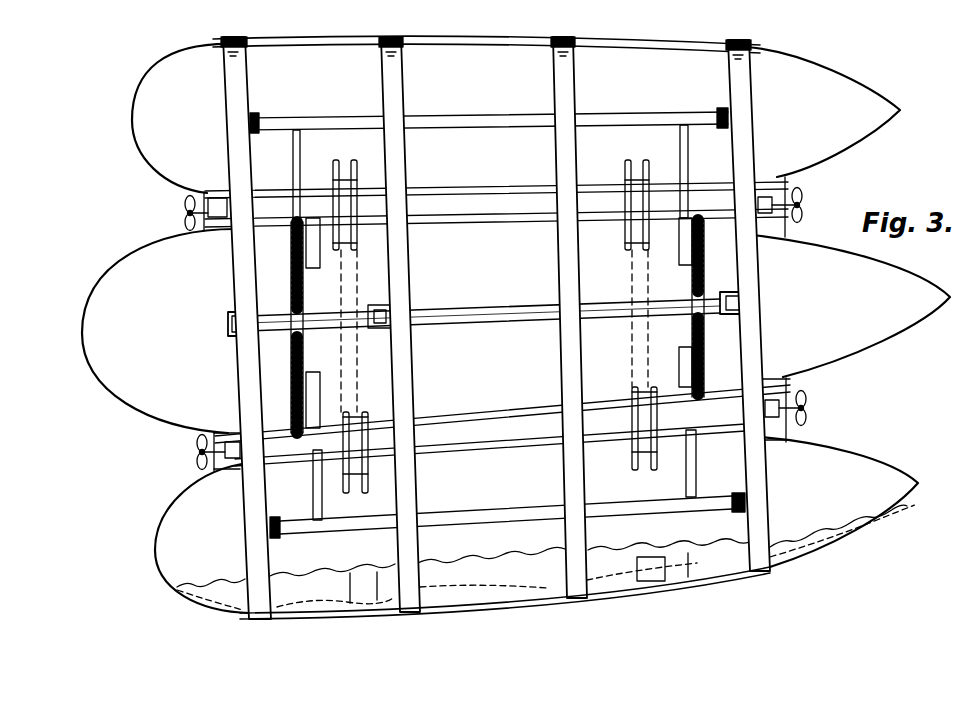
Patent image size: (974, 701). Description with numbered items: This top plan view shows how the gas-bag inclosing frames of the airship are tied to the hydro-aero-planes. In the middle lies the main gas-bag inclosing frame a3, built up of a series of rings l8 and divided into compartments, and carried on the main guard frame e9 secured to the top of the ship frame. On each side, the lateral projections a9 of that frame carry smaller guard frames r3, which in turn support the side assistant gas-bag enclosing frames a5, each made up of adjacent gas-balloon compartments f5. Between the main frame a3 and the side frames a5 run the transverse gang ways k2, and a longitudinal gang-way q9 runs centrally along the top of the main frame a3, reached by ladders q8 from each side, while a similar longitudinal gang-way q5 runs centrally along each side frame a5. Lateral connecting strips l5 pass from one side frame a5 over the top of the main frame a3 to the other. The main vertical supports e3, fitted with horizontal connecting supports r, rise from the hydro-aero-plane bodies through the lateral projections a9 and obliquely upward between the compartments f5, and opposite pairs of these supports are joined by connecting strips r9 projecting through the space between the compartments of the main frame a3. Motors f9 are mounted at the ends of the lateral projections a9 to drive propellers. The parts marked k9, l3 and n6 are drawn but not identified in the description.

The main gas-bag inclosing frame a3 is at (140, 424).
The side assistant gas-bag enclosing frame a5 is at (160, 178).
The lateral projection a9 is at (742, 405).
The main vertical support e3 is at (357, 161).
The main gas-balloon inclosing frame supporting guard frame e9 is at (230, 428).
The gas-balloon f5 is at (333, 599).
The motor f9 is at (213, 195).
The transverse gang way k2 is at (293, 173).
The propeller k9 is at (186, 216).
The bearing block l3 is at (258, 116).
The lateral connecting strip l5 is at (410, 274).
The ring l8 is at (227, 322).
The float compartment n6 is at (519, 578).
The longitudinally extending gang-way q5 is at (478, 115).
The ladder q8 is at (291, 284).
The gang-way q9 is at (483, 325).
The horizontally arranged connecting support r is at (350, 180).
The smaller gas balloon inclosing frame supporting guard frame r3 is at (597, 44).
The connecting strip r9 is at (343, 354).